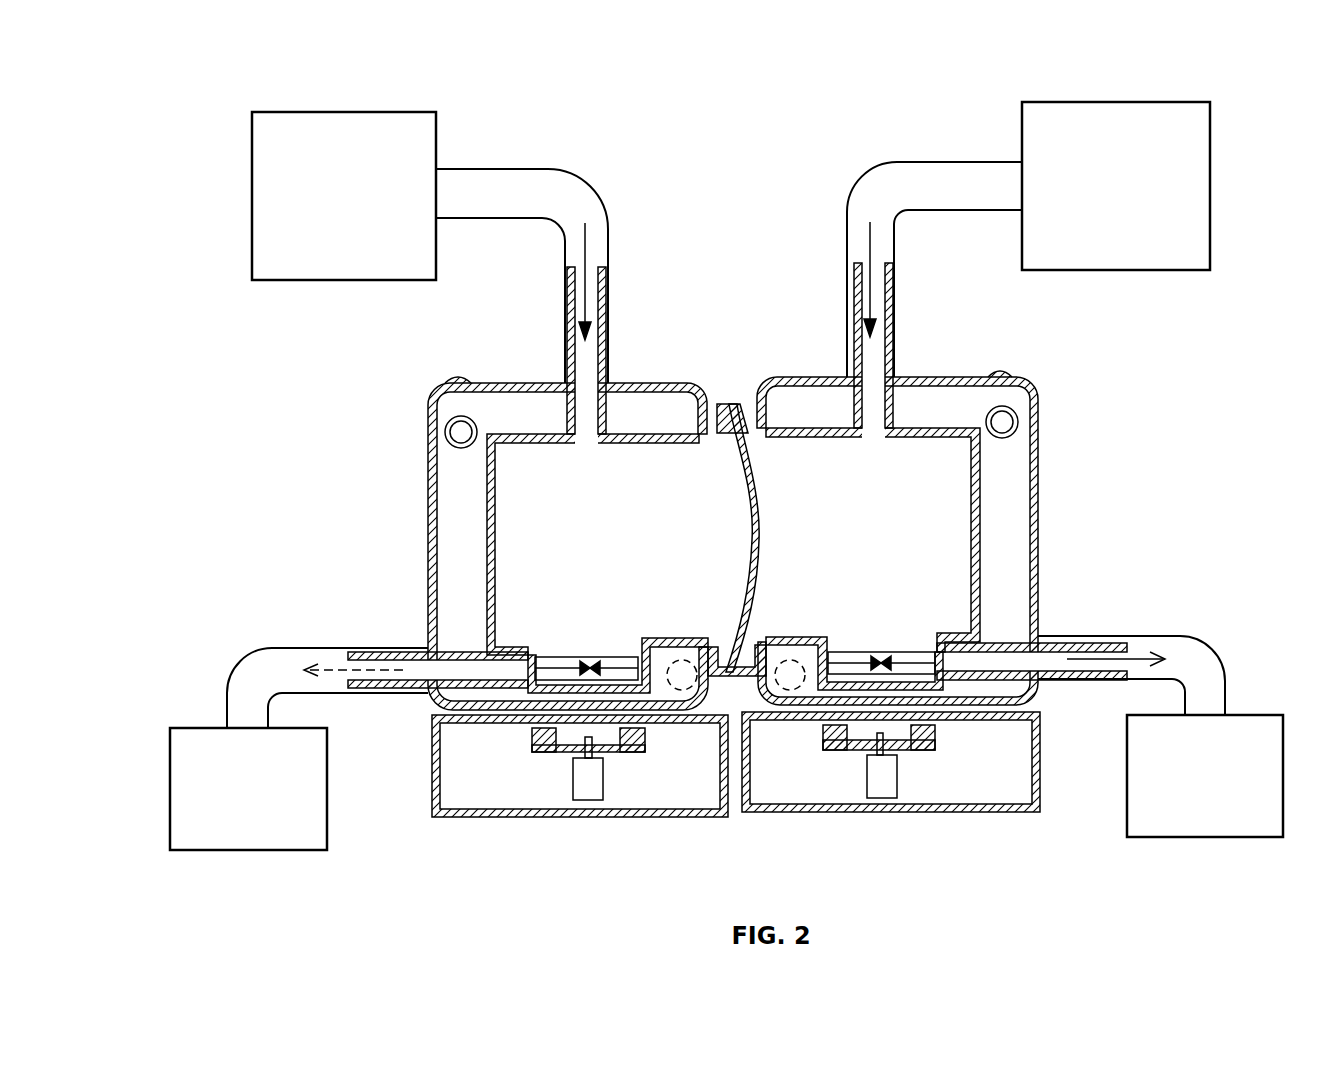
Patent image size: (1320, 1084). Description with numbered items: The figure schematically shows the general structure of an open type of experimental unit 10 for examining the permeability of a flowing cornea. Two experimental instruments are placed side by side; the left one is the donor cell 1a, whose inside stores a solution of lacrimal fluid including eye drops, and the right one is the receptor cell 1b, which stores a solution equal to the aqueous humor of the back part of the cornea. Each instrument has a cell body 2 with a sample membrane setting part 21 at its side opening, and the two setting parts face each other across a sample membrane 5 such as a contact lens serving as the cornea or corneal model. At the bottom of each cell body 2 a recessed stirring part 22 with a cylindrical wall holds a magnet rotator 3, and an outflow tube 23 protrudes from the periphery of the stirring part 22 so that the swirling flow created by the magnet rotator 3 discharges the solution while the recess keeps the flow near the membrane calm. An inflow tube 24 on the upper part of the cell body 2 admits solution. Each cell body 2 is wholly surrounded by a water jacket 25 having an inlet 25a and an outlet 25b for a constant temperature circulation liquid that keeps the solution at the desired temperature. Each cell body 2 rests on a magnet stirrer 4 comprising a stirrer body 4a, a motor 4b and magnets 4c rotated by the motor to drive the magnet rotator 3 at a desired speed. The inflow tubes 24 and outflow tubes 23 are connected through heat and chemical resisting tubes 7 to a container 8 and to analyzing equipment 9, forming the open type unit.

The experimental unit 10 is at (466, 103).
The donor cell 1a is at (490, 383).
The receptor cell 1b is at (968, 378).
The cell body 2 is at (486, 473).
The magnet rotator 3 is at (562, 657).
The magnet stirrer 4 is at (668, 817).
The stirrer body 4a is at (480, 817).
The motor 4b is at (588, 800).
The magnets 4c is at (532, 739).
The sample membrane 5 is at (758, 493).
The tubes 7 is at (527, 170).
The container 8 is at (272, 283).
The analyzing equipment 9 is at (193, 737).
The sample membrane setting part 21 is at (730, 403).
The stirring part 22 is at (642, 637).
The outflow tube 23 is at (362, 652).
The inflow tube 24 is at (604, 290).
The water jacket 25 is at (428, 508).
The inlet 25a is at (686, 658).
The outlet 25b is at (454, 382).